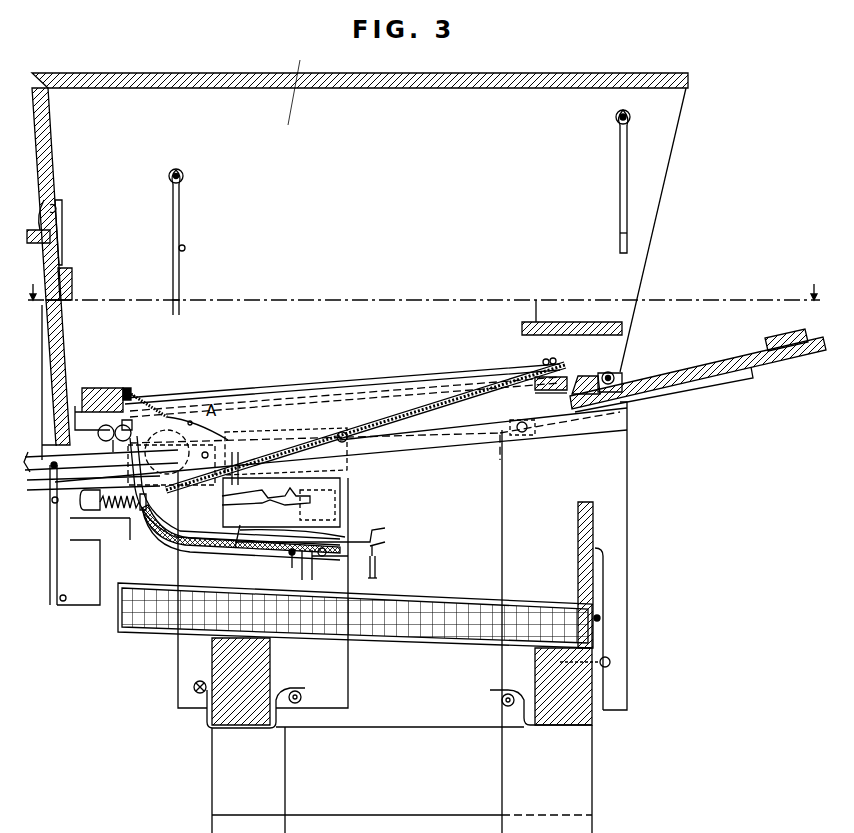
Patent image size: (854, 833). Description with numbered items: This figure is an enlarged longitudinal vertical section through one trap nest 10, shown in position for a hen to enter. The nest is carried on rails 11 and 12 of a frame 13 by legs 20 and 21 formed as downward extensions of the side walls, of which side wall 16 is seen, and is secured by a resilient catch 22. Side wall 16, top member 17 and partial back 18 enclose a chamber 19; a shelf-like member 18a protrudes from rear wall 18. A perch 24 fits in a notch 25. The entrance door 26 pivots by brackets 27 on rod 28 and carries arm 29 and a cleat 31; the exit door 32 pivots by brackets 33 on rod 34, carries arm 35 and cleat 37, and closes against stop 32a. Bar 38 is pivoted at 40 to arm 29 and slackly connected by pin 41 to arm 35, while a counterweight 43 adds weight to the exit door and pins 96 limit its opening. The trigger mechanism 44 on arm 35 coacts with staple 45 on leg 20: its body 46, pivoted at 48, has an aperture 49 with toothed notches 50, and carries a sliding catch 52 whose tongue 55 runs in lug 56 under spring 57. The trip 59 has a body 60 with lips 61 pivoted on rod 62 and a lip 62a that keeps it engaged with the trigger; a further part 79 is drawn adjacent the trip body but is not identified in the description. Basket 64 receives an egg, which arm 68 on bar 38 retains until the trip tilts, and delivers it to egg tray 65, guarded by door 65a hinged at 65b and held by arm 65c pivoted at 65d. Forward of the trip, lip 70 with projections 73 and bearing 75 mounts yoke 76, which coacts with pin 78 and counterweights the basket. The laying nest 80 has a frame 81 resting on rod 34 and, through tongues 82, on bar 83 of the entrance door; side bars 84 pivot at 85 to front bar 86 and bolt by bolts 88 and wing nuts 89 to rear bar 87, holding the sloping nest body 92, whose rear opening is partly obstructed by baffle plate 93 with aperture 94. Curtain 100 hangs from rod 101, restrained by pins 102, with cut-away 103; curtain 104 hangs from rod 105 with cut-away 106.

The trap nest 10 is at (370, 203).
The rail 11 is at (212, 650).
The rail 12 is at (34, 486).
The frame 13 is at (595, 780).
The side wall 16 is at (655, 152).
The top member 17 is at (562, 73).
The partial back 18 is at (50, 117).
The shelf-like member 18a is at (50, 200).
The chamber 19 is at (301, 80).
The leg 20 is at (190, 688).
The leg 21 is at (627, 482).
The resilient catch 22 is at (300, 692).
The perch 24 is at (533, 308).
The notch 25 is at (521, 328).
The entrance door 26 is at (698, 358).
The bracket members 27 is at (618, 372).
The transverse rod 28 is at (617, 380).
The arm 29 is at (690, 385).
The cleat 31 is at (778, 332).
The exit door 32 is at (62, 328).
The stop 32a is at (62, 250).
The bracket members 33 is at (77, 405).
The transverse rod 34 is at (98, 436).
The arm 35 is at (52, 556).
The cleat 37 is at (72, 280).
The bar 38 is at (444, 442).
The pivot 40 is at (523, 433).
The pin 41 is at (58, 467).
The counterweight 43 is at (92, 605).
The trigger mechanism 44 is at (325, 477).
The staple 45 is at (240, 462).
The body portion 46 is at (325, 499).
The pivot 48 is at (52, 504).
The elongated aperture 49 is at (238, 545).
The toothed notches 50 is at (276, 478).
The catch 52 is at (231, 506).
The tongue 55 is at (108, 510).
The outstruck lug 56 is at (108, 525).
The spring 57 is at (140, 506).
The trip 59 is at (320, 558).
The body portion 60 is at (300, 562).
The downturned lips 61 is at (284, 551).
The rod 62 is at (290, 560).
The lip 62a is at (325, 532).
The basket 64 is at (158, 545).
The egg tray 65 is at (396, 606).
The door 65a is at (593, 526).
The hinge 65b is at (598, 618).
The arm 65c is at (600, 566).
The pivot 65d is at (610, 663).
The arm 68 is at (188, 545).
The lip 70 is at (378, 542).
The projections 73 is at (382, 533).
The bearing 75 is at (376, 556).
The yoke 76 is at (377, 574).
The pin 78 is at (344, 432).
The plate 79 is at (330, 555).
The laying nest 80 is at (342, 374).
The frame 81 is at (552, 396).
The tongues 82 is at (582, 375).
The transverse bar 83 is at (590, 372).
The side bars 84 is at (365, 417).
The pivot 85 is at (545, 362).
The front transverse bar 86 is at (536, 390).
The rear transverse bar 87 is at (100, 388).
The bolts 88 is at (127, 387).
The wing nuts 89 is at (132, 429).
The nest body 92 is at (300, 396).
The baffle plate 93 is at (165, 391).
The aperture 94 is at (195, 420).
The pins 96 is at (60, 600).
The curtain 100 is at (199, 238).
The transverse rod 101 is at (183, 175).
The pins 102 is at (185, 248).
The cut away portion 103 is at (180, 292).
The curtain 104 is at (600, 173).
The transverse rod 105 is at (616, 112).
The cut away portion 106 is at (620, 235).